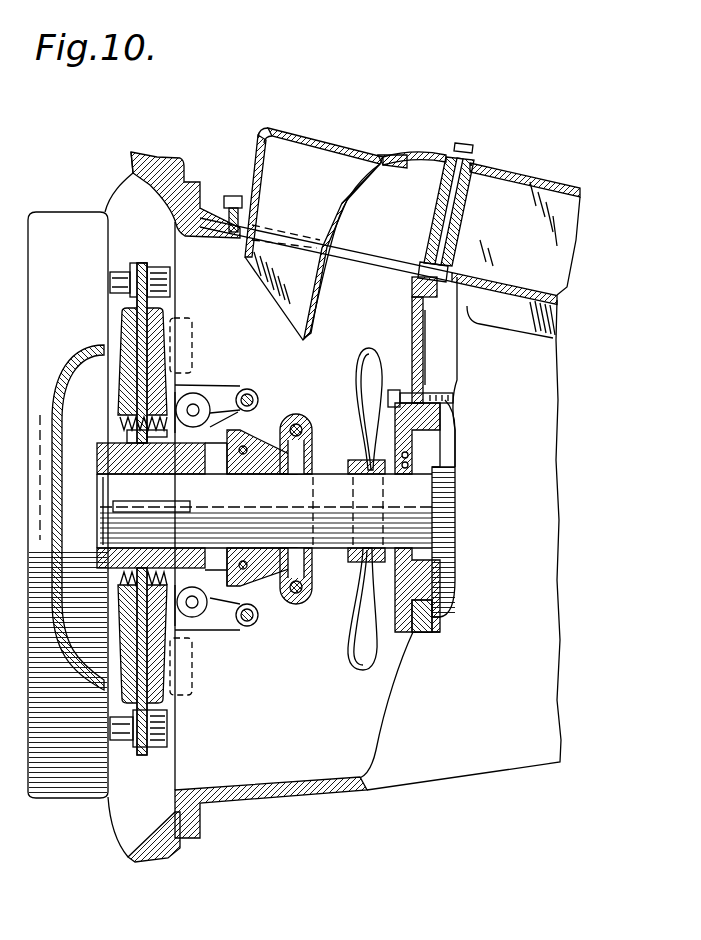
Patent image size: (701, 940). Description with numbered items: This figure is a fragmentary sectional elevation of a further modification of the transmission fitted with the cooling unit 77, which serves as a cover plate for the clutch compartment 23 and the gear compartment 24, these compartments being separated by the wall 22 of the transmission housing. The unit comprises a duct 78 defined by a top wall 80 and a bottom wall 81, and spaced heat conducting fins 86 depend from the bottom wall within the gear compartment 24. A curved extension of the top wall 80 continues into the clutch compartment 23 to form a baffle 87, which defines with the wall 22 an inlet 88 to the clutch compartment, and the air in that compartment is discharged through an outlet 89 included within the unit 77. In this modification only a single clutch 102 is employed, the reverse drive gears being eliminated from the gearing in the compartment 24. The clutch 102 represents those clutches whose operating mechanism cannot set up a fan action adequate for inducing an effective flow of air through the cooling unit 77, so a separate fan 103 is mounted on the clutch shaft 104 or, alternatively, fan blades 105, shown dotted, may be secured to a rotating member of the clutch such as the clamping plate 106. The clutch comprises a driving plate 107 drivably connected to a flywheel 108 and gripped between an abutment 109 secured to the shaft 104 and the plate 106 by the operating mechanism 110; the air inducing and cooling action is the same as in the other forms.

The wall 22 is at (412, 317).
The clutch compartment 23 is at (310, 760).
The gear compartment 24 is at (440, 341).
The cooling unit 77 is at (416, 146).
The duct 78 is at (497, 188).
The top wall 80 is at (546, 179).
The bottom wall 81 is at (558, 291).
The heat conducting fins 86 is at (553, 325).
The baffle 87 is at (286, 218).
The inlet 88 is at (398, 250).
The outlet 89 is at (322, 188).
The clutch 102 is at (258, 327).
The fan 103 is at (358, 640).
The clutch shaft 104 is at (340, 547).
The fan blades 105 is at (194, 661).
The clamping plate 106 is at (163, 706).
The driving plate 107 is at (146, 758).
The flywheel 108 is at (72, 798).
The abutment 109 is at (112, 700).
The operating mechanism 110 is at (234, 390).